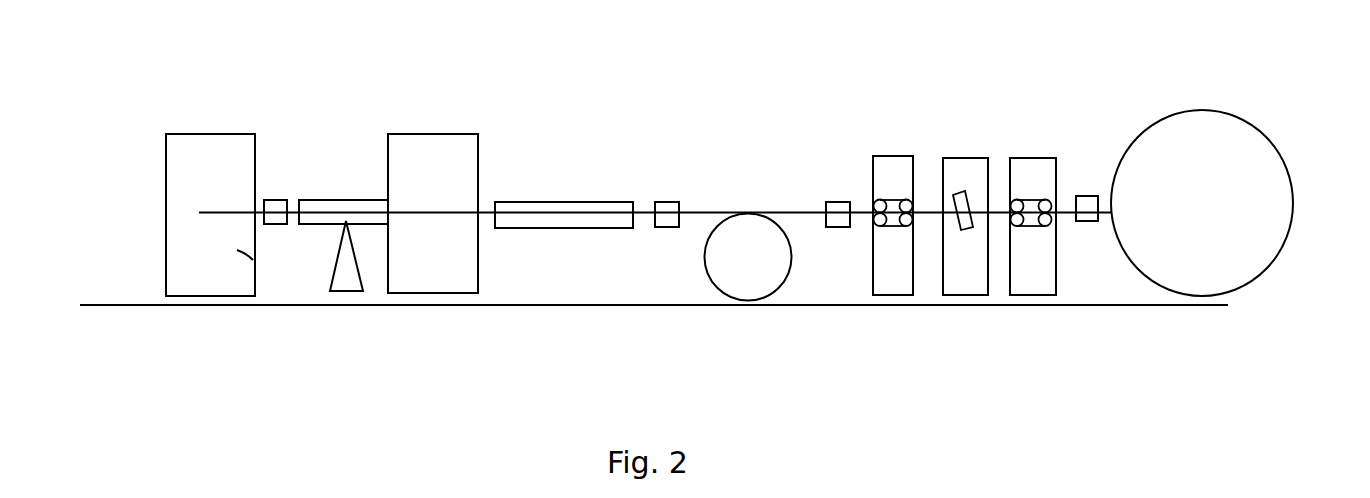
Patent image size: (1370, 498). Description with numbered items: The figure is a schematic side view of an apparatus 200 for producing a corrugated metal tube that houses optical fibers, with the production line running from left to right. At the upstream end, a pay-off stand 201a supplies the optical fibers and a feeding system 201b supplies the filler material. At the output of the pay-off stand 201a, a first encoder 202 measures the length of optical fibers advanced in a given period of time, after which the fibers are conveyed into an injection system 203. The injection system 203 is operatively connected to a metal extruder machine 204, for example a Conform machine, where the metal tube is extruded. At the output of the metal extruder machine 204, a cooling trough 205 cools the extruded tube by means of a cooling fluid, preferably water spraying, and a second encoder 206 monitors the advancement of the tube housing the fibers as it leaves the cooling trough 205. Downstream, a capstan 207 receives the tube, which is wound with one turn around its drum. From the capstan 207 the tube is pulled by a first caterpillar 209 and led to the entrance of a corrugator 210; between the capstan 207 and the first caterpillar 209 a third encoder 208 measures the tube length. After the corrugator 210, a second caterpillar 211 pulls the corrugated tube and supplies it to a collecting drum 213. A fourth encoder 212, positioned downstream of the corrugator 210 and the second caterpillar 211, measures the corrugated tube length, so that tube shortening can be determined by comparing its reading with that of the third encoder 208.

The apparatus 200 is at (213, 83).
The pay-off stand 201a is at (200, 243).
The feeding system 201b is at (345, 275).
The first encoder 202 is at (273, 200).
The injection system 203 is at (328, 208).
The metal extruder machine 204 is at (465, 275).
The cooling trough 205 is at (530, 208).
The second encoder 206 is at (668, 208).
The capstan 207 is at (735, 272).
The third encoder 208 is at (840, 215).
The first caterpillar 209 is at (883, 168).
The corrugator 210 is at (962, 167).
The second caterpillar 211 is at (1033, 273).
The fourth encoder 212 is at (1082, 220).
The collecting drum 213 is at (1202, 167).